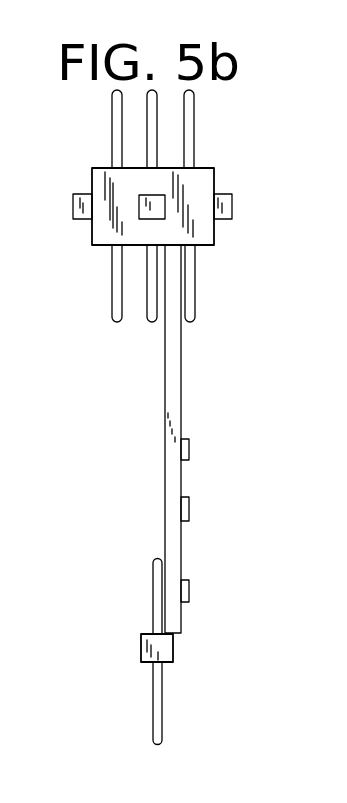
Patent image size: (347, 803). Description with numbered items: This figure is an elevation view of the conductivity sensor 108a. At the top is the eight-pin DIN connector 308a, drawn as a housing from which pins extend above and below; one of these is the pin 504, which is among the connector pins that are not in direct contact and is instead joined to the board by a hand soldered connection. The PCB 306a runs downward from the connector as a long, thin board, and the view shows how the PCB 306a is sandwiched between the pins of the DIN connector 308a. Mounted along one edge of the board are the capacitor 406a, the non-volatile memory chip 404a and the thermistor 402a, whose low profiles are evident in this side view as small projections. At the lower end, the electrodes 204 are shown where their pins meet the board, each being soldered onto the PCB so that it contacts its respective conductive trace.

The conductivity sensor 108a is at (210, 328).
The 8-pin DIN connector 308a is at (92, 168).
The pin 504 is at (111, 302).
The PCB 306a is at (164, 395).
The capacitor 406a is at (189, 447).
The non-volatile memory chip 404a is at (189, 504).
The thermistor 402a is at (189, 590).
The electrodes 204 is at (141, 656).